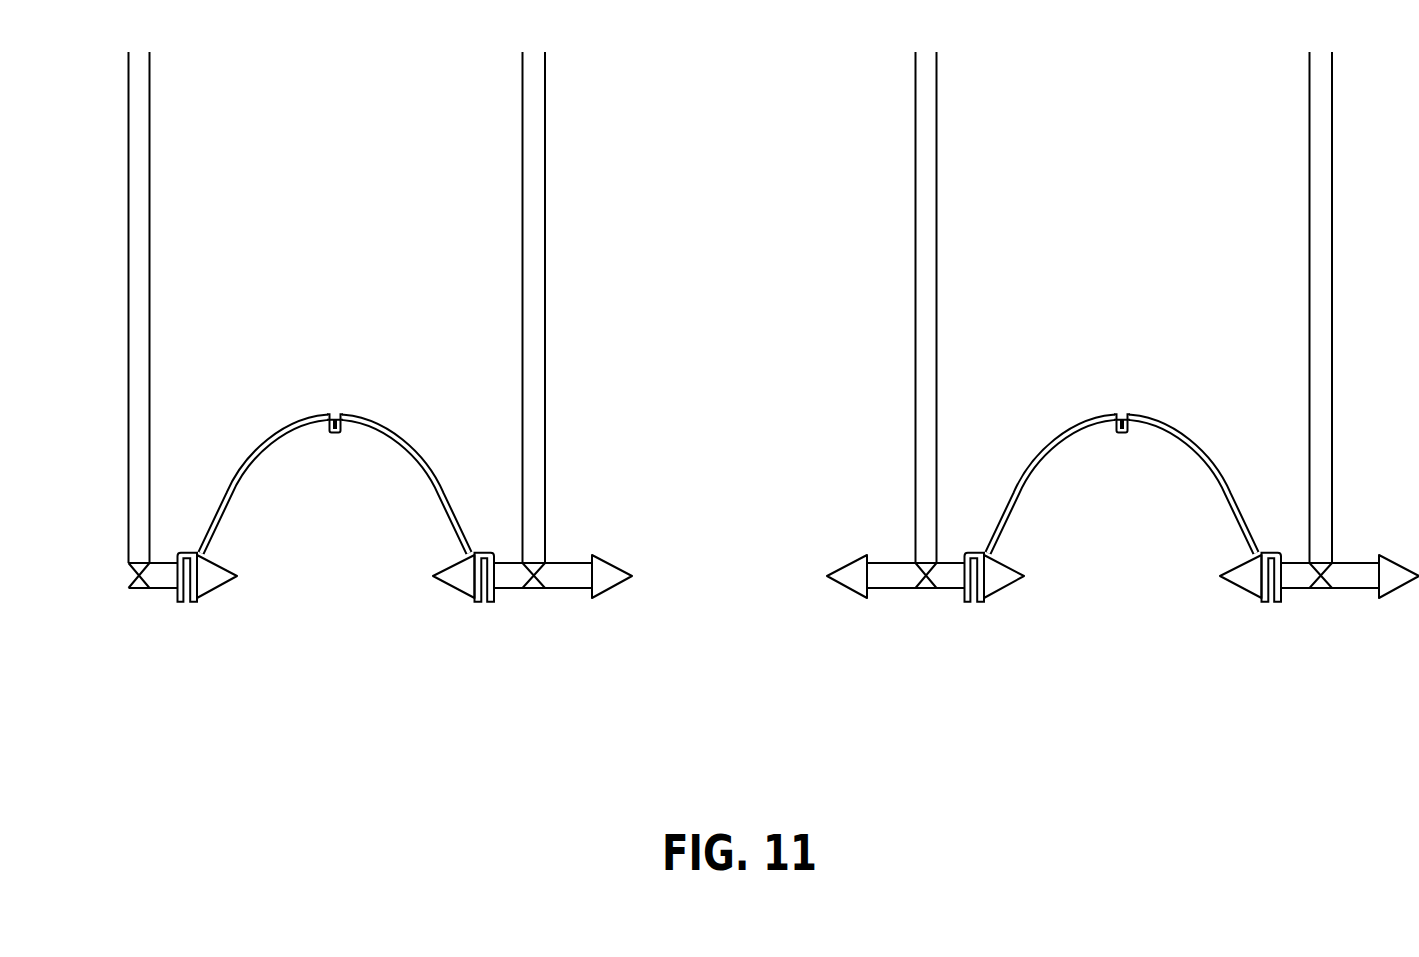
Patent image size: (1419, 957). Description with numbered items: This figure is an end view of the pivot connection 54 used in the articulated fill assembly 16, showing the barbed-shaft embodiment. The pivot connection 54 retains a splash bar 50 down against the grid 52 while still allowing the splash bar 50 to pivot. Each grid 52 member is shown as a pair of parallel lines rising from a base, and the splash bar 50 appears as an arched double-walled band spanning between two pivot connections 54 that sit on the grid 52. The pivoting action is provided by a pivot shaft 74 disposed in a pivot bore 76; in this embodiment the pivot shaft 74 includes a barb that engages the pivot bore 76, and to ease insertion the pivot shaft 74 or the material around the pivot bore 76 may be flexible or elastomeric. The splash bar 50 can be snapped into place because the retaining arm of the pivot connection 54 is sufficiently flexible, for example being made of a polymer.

The articulated fill assembly 16 is at (793, 722).
The splash bar 50 is at (362, 416).
The grid 52 is at (546, 355).
The pivot connection 54 is at (204, 630).
The pivot shaft 74 is at (443, 598).
The pivot bore 76 is at (497, 600).